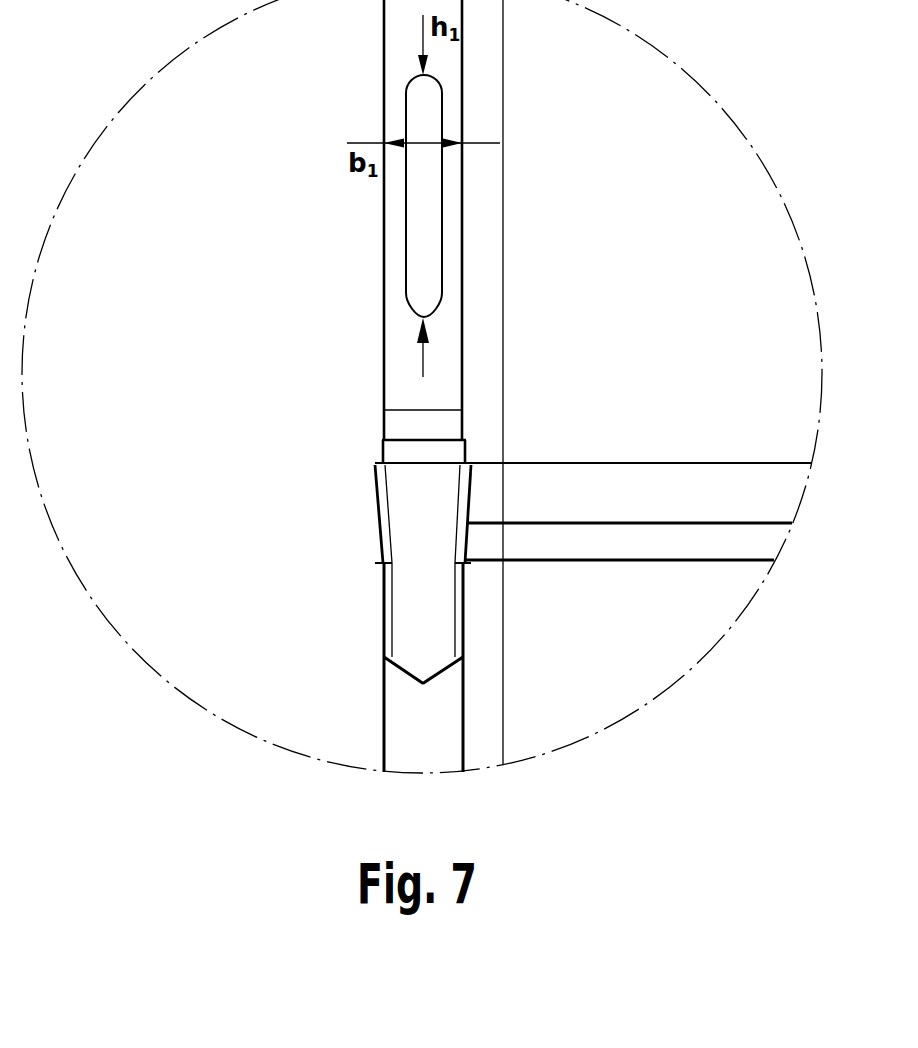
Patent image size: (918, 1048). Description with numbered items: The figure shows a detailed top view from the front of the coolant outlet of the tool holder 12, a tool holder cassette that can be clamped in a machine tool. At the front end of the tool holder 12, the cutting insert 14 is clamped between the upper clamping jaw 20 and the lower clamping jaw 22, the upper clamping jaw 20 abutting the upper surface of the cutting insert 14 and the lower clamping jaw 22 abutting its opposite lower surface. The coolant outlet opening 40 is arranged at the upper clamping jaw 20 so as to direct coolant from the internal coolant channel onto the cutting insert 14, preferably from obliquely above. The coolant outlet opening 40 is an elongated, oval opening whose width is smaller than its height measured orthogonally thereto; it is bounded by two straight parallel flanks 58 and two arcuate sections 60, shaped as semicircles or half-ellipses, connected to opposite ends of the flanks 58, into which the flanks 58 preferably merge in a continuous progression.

The tool holder 12 is at (707, 130).
The cutting insert 14 is at (438, 618).
The upper clamping jaw 20 is at (409, 355).
The lower clamping jaw 22 is at (409, 720).
The coolant outlet opening 40 is at (425, 197).
The parallel flanks 58 is at (406, 240).
The arcuate sections 60 is at (438, 87).